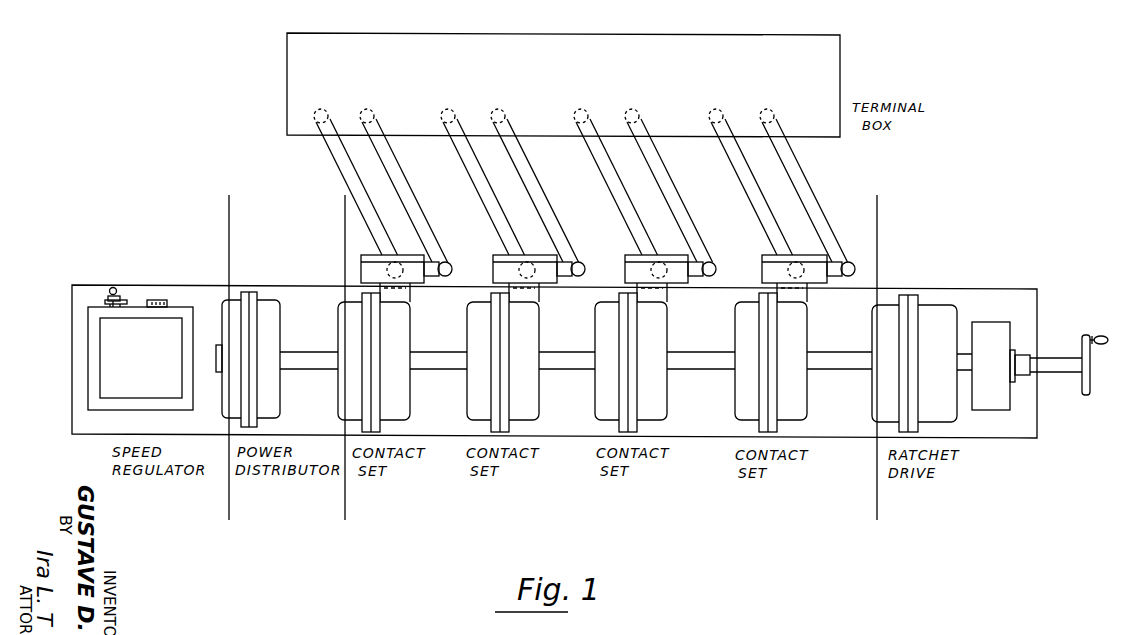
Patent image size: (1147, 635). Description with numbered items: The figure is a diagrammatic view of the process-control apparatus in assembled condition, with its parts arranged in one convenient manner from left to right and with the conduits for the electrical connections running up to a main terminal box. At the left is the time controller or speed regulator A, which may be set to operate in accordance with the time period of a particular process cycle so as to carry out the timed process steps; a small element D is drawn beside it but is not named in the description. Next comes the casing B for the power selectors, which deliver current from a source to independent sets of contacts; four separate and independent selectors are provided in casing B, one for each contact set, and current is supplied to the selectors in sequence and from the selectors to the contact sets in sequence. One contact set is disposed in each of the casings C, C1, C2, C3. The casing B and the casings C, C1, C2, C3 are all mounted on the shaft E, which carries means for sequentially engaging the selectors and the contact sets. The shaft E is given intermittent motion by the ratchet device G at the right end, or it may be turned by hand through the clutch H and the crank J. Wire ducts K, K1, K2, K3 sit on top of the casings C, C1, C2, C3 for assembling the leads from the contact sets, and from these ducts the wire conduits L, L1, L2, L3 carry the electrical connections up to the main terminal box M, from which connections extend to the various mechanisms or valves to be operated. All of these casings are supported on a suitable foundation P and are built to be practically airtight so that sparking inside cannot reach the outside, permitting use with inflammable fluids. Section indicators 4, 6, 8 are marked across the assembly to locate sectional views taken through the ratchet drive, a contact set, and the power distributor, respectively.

The main terminal box M is at (563, 85).
The wire conduit L is at (336, 166).
The wire conduit L1 is at (511, 190).
The wire conduit L2 is at (644, 190).
The wire conduit L3 is at (779, 190).
The wire duct K is at (371, 266).
The wire duct K1 is at (482, 266).
The wire duct K2 is at (624, 270).
The wire duct K3 is at (762, 270).
The speed regulator A is at (140, 349).
The casing for the power selectors B is at (251, 359).
The contact set casing C is at (374, 362).
The contact set casing C1 is at (503, 362).
The contact set casing C2 is at (631, 362).
The contact set casing C3 is at (771, 362).
The speed regulator coupling D is at (219, 345).
The shaft E is at (565, 366).
The ratchet device G is at (914, 363).
The clutch H is at (1001, 366).
The crank J is at (1085, 341).
The foundation P is at (950, 289).
The section line 4- 4 is at (922, 219).
The section line 6- 6 is at (382, 217).
The section line 8- 8 is at (270, 217).